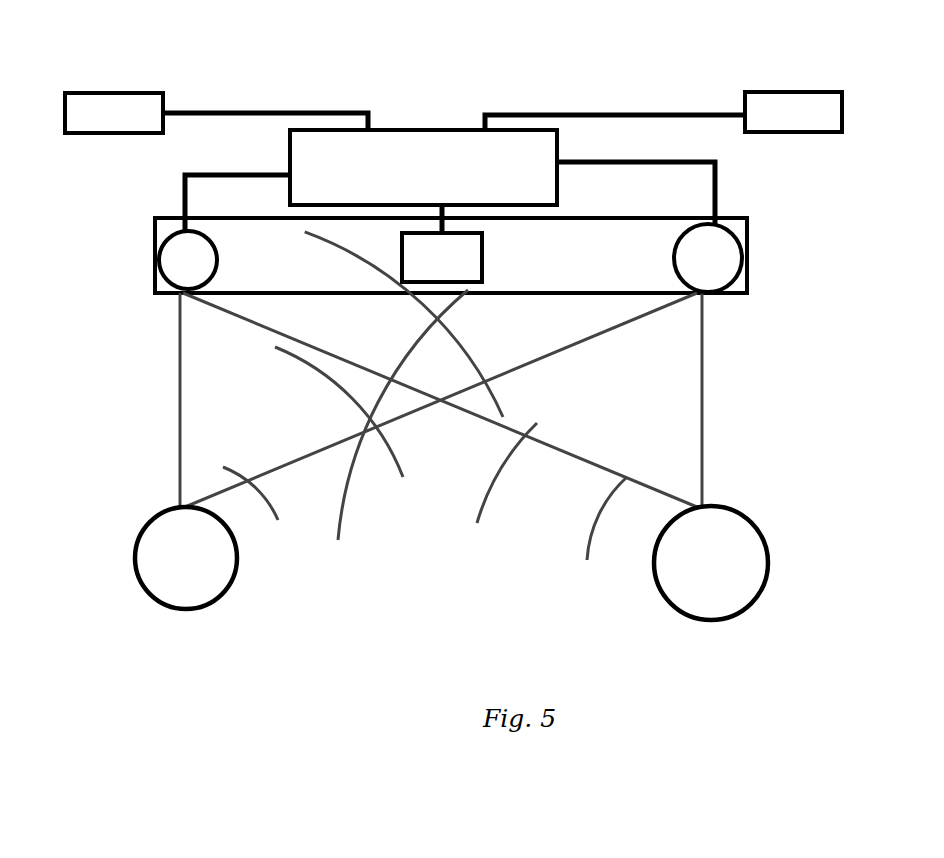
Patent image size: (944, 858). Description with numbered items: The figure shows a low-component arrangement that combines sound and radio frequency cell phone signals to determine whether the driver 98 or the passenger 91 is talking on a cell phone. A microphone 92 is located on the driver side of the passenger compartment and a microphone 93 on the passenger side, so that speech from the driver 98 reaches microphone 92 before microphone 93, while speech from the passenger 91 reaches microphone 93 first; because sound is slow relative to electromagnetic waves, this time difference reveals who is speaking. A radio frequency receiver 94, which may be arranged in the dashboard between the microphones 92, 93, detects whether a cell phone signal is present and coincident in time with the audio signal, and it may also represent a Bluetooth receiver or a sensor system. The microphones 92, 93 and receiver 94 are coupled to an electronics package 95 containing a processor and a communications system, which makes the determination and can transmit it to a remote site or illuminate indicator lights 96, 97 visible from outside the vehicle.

The passenger 91 is at (722, 577).
The microphone 92 is at (177, 250).
The microphone 93 is at (720, 268).
The radio frequency receiver 94 is at (470, 265).
The electronics package 95 is at (453, 150).
The indicator light 96 is at (108, 88).
The indicator light 97 is at (797, 88).
The driver 98 is at (203, 565).